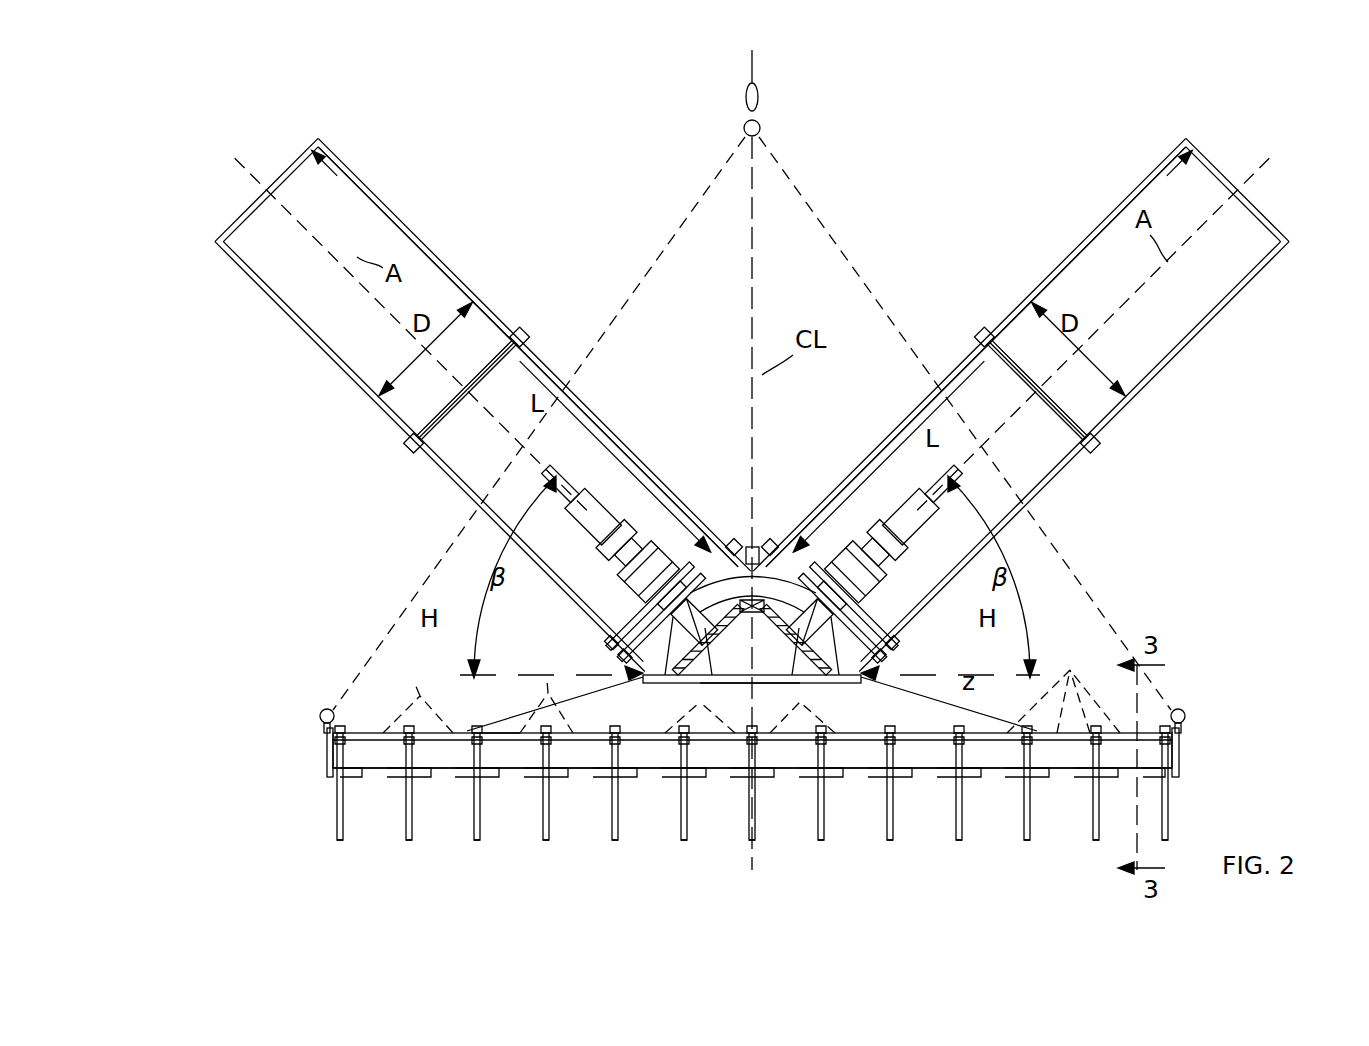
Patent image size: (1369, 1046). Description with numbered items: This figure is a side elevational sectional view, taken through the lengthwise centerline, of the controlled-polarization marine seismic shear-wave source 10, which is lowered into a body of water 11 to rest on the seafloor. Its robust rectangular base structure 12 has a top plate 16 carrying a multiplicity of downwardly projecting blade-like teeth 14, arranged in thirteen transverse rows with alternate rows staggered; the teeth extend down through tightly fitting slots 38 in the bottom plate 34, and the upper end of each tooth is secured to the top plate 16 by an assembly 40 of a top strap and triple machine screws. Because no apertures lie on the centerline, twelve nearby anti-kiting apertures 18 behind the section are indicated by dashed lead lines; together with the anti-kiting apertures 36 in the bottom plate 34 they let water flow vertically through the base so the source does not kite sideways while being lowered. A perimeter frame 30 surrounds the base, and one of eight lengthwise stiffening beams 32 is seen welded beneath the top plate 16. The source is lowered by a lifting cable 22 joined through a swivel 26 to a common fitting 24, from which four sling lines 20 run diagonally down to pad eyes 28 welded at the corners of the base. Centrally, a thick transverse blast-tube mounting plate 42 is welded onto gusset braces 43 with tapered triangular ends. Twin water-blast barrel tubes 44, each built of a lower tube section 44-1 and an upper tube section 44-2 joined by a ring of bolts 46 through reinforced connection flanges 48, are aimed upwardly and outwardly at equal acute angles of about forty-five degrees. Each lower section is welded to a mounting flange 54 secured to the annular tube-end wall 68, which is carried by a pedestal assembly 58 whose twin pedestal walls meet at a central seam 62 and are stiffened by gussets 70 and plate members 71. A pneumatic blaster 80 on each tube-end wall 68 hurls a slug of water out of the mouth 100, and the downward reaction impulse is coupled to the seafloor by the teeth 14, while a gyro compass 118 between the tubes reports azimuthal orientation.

The controlled-polarization marine seismic shear-wave source 10 is at (1100, 130).
The body of water 11 is at (988, 137).
The base structure 12 is at (770, 757).
The blade-like teeth 14 is at (480, 820).
The top plate 16 is at (500, 730).
The anti-kiting apertures 18 is at (751, 685).
The sling 20 is at (637, 272).
The lifting cable 22 is at (753, 62).
The common fitting 24 is at (761, 128).
The swivel 26 is at (745, 98).
The pad eyes 28 is at (320, 717).
The perimeter frame 30 is at (325, 760).
The stiffening beams 32 is at (662, 764).
The bottom plate 34 is at (802, 796).
The anti-kiting apertures 36 is at (457, 778).
The slots 38 is at (547, 776).
The assembly 40 is at (646, 680).
The blast-tube mounting plate 42 is at (750, 684).
The gusset braces 43 is at (800, 707).
The water-blast barrel tubes 44 is at (345, 388).
The lower tube section 44-1 is at (657, 466).
The upper tube section 44-2 is at (400, 222).
The bolts 46 is at (524, 330).
The reinforced connection flanges 48 is at (410, 460).
The mounting flanges 54 is at (615, 650).
The pedestal assembly 58 is at (628, 678).
The central seam 62 is at (725, 630).
The annular tube-end wall 68 is at (646, 574).
The stiffening gussets 70 is at (748, 676).
The plate member 71 is at (800, 614).
The pneumatic blaster 80 is at (592, 478).
The mouth 100 is at (300, 155).
The gyro compass 118 is at (758, 545).